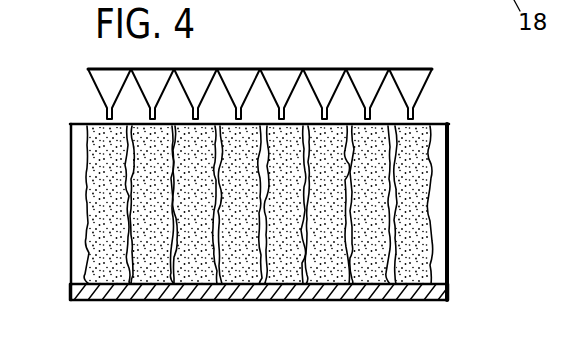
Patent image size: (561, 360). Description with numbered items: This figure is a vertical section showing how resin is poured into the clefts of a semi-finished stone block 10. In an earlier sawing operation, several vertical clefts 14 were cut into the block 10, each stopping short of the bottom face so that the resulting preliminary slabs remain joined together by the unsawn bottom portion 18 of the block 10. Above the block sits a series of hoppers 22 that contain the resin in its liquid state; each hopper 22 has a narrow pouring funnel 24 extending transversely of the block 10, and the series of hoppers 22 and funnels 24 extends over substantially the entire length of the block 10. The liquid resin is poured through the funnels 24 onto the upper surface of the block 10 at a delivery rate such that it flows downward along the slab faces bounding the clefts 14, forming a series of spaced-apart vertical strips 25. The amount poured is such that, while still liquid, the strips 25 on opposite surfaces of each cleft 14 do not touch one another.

The block 10 is at (448, 171).
The clefts 14 is at (80, 260).
The unsawn bottom portion 18 is at (378, 292).
The hoppers 22 is at (293, 77).
The pouring funnels 24 is at (107, 117).
The vertical strips 25 is at (193, 268).